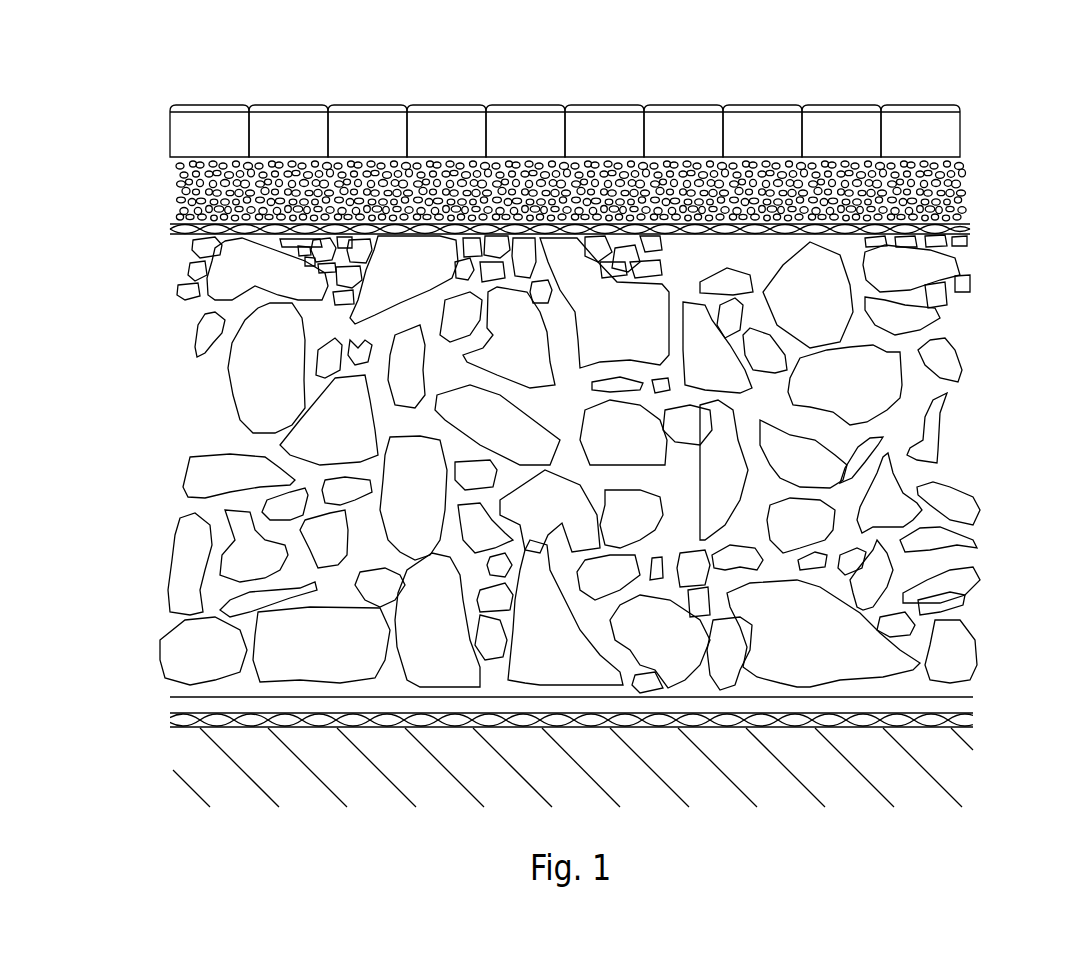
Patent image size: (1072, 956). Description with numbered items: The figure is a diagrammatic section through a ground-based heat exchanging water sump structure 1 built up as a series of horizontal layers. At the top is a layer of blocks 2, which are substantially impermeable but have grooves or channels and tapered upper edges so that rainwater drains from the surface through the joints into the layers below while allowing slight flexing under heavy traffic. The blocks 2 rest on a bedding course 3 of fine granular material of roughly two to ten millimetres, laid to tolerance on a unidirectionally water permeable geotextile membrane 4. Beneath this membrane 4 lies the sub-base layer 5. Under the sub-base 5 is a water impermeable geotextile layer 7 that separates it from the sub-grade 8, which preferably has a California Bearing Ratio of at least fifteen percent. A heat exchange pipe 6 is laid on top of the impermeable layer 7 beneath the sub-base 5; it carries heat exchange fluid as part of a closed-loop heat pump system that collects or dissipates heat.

The ground-based heat exchanging water sump structure 1 is at (763, 88).
The blocks 2 is at (970, 140).
The bedding course 3 is at (945, 196).
The unidirectionally water permeable geotextile membrane 4 is at (877, 232).
The sub-base layer 5 is at (857, 307).
The heat exchange pipe 6 is at (958, 692).
The water impermeable geotextile layer 7 is at (963, 719).
The sub-grade 8 is at (950, 764).